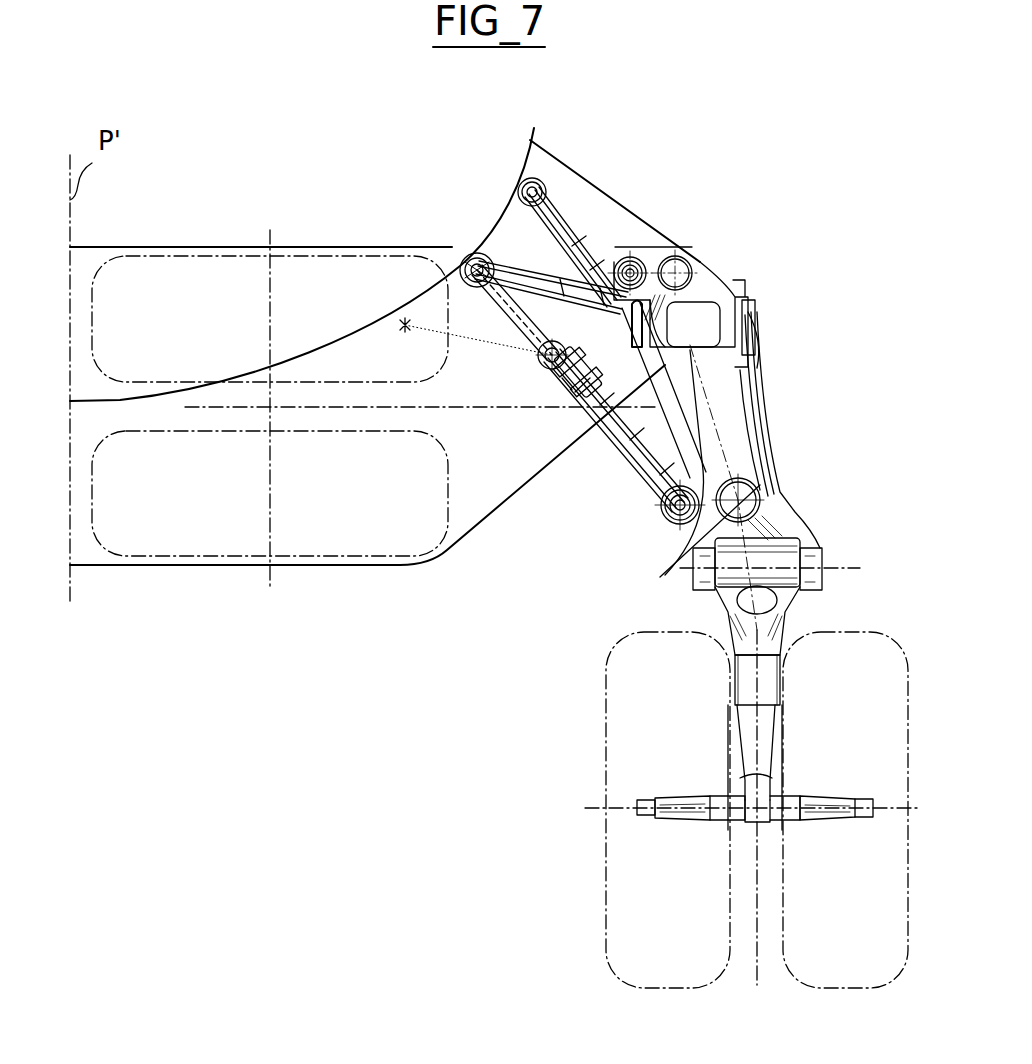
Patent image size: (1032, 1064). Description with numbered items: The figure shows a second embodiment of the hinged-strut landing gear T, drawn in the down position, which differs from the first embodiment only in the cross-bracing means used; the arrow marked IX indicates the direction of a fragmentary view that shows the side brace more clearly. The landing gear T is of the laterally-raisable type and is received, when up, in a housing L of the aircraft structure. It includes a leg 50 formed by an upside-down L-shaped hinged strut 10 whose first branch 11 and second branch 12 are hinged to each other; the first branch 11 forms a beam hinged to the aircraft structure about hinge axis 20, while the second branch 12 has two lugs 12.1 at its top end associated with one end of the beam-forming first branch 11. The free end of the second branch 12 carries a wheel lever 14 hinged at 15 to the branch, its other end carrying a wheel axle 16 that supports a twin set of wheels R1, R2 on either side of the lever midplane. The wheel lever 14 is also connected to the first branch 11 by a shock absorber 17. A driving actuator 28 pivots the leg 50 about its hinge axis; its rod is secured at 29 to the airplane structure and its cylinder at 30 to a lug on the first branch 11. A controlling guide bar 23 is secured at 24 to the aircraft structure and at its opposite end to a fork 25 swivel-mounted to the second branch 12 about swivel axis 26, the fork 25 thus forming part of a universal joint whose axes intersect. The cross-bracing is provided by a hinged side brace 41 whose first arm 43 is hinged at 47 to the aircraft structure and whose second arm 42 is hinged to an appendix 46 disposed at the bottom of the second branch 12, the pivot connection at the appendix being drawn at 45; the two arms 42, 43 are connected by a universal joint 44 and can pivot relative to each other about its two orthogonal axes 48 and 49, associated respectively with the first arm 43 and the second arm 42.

The hinged strut 10 is at (762, 368).
The first branch 11 is at (712, 270).
The second branch 12 is at (760, 388).
The lugs 12.1 is at (618, 306).
The wheel lever 14 is at (770, 736).
The hinge axis of wheel lever 15 is at (782, 560).
The wheel axle 16 is at (688, 820).
The shock absorber 17 is at (776, 436).
The hinge axis 20 is at (623, 256).
The controlling guide bar 23 is at (583, 255).
The securing point of guide bar 24 is at (522, 182).
The fork 25 is at (755, 490).
The swivel axis 26 is at (690, 545).
The driving actuator 28 is at (541, 288).
The rod securing point 29 is at (468, 262).
The cylinder securing point 30 is at (590, 350).
The hinged side brace 41 is at (498, 343).
The second arm 42 is at (628, 470).
The first arm 43 is at (500, 318).
The universal joint 44 is at (548, 392).
The rod pivot 45 is at (672, 518).
The appendix 46 is at (672, 418).
The hinge of first arm 47 is at (480, 255).
The universal joint axis 48 is at (538, 362).
The universal joint axis 49 is at (560, 412).
The leg 50 is at (772, 270).
The housing L is at (480, 490).
The landing gear T is at (540, 563).
The wheel R1 is at (97, 345).
The wheel R2 is at (112, 470).
The section IX view direction IX is at (668, 212).